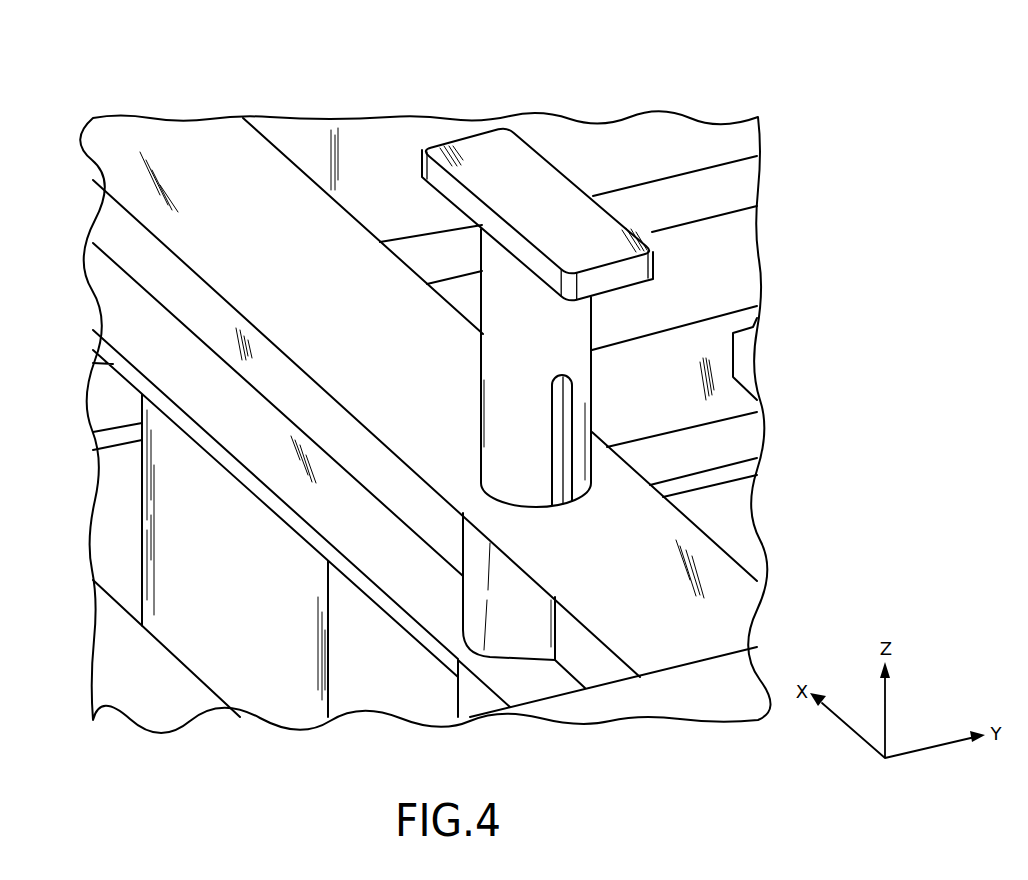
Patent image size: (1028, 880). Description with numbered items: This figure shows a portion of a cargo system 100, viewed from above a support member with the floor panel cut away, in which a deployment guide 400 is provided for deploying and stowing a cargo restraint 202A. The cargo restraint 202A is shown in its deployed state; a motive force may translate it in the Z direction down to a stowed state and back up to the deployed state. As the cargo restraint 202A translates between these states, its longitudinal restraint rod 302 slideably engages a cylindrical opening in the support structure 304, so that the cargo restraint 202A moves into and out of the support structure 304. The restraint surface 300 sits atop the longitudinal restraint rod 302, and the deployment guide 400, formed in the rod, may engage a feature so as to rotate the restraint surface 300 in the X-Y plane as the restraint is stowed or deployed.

The cargo system 100 is at (254, 101).
The cargo restraint 202A is at (535, 163).
The restraint surface 300 is at (627, 277).
The longitudinal restraint rod 302 is at (570, 340).
The support structure 304 is at (220, 255).
The deployment guide 400 is at (567, 488).